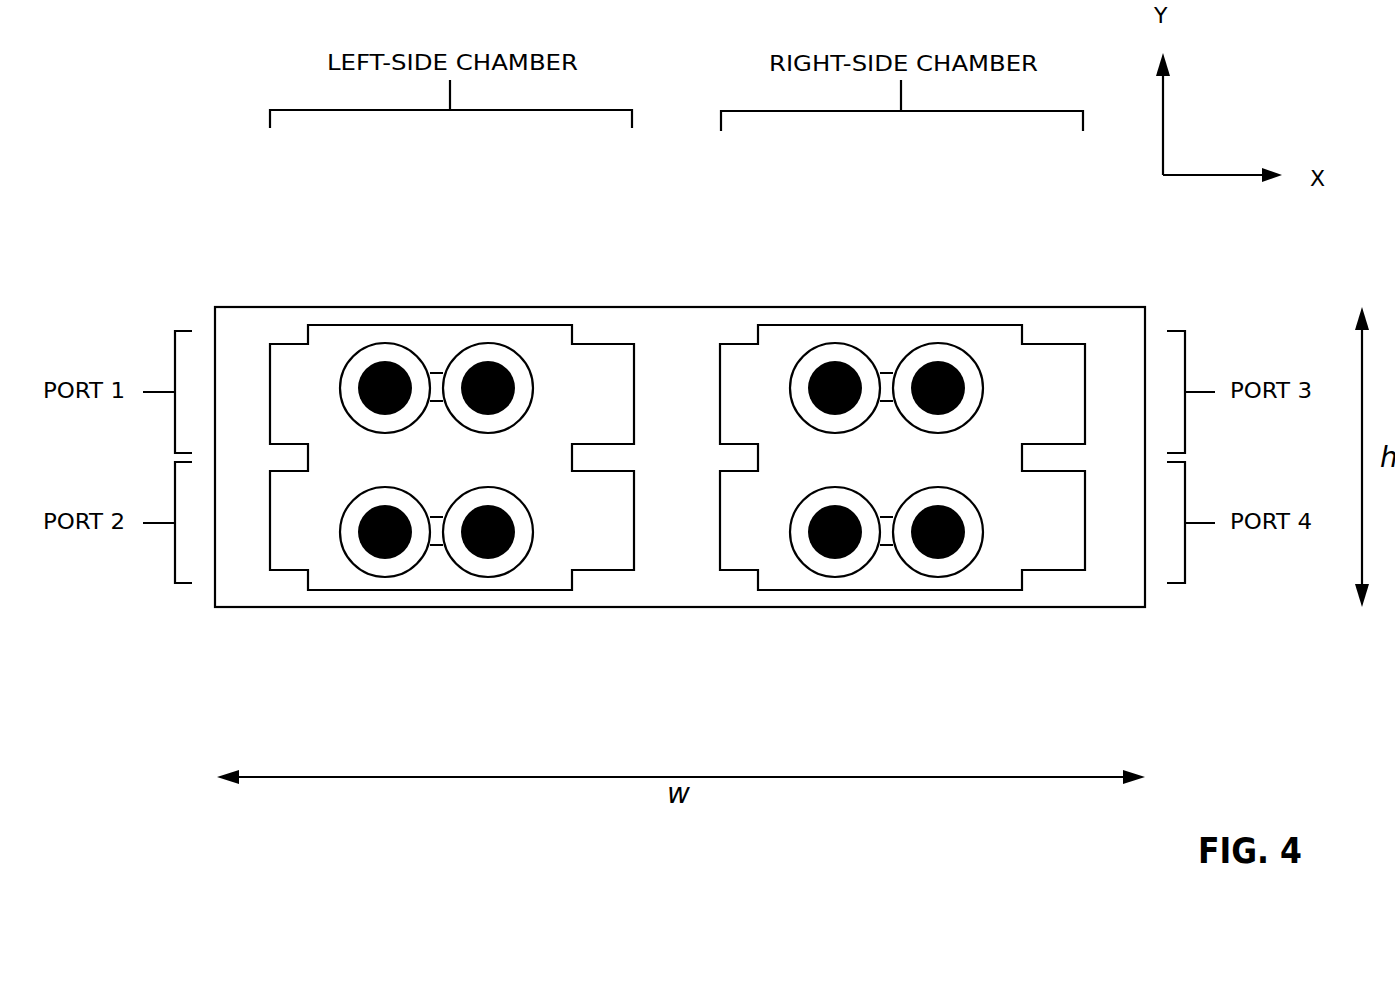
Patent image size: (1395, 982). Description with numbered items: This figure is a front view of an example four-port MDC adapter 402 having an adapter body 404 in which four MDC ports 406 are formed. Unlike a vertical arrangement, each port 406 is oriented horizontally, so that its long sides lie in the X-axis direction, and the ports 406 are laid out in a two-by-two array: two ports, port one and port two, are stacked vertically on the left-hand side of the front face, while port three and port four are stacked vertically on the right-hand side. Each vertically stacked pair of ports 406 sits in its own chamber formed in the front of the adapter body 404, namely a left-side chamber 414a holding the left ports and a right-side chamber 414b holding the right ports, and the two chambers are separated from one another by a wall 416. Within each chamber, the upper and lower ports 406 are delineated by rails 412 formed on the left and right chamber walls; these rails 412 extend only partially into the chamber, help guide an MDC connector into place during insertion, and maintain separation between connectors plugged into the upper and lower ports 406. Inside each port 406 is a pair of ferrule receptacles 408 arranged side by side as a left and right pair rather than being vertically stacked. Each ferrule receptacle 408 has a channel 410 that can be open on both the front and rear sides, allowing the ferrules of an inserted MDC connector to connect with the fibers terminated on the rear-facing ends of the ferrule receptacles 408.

The four-port MDC adapter 402 is at (182, 176).
The adapter body 404 is at (1064, 307).
The MDC port 406 is at (293, 362).
The ferrule receptacle 408 is at (518, 352).
The channel 410 is at (478, 362).
The rail 412 is at (603, 457).
The left-side chamber 414a is at (332, 475).
The right-side chamber 414b is at (987, 475).
The wall 416 is at (688, 530).